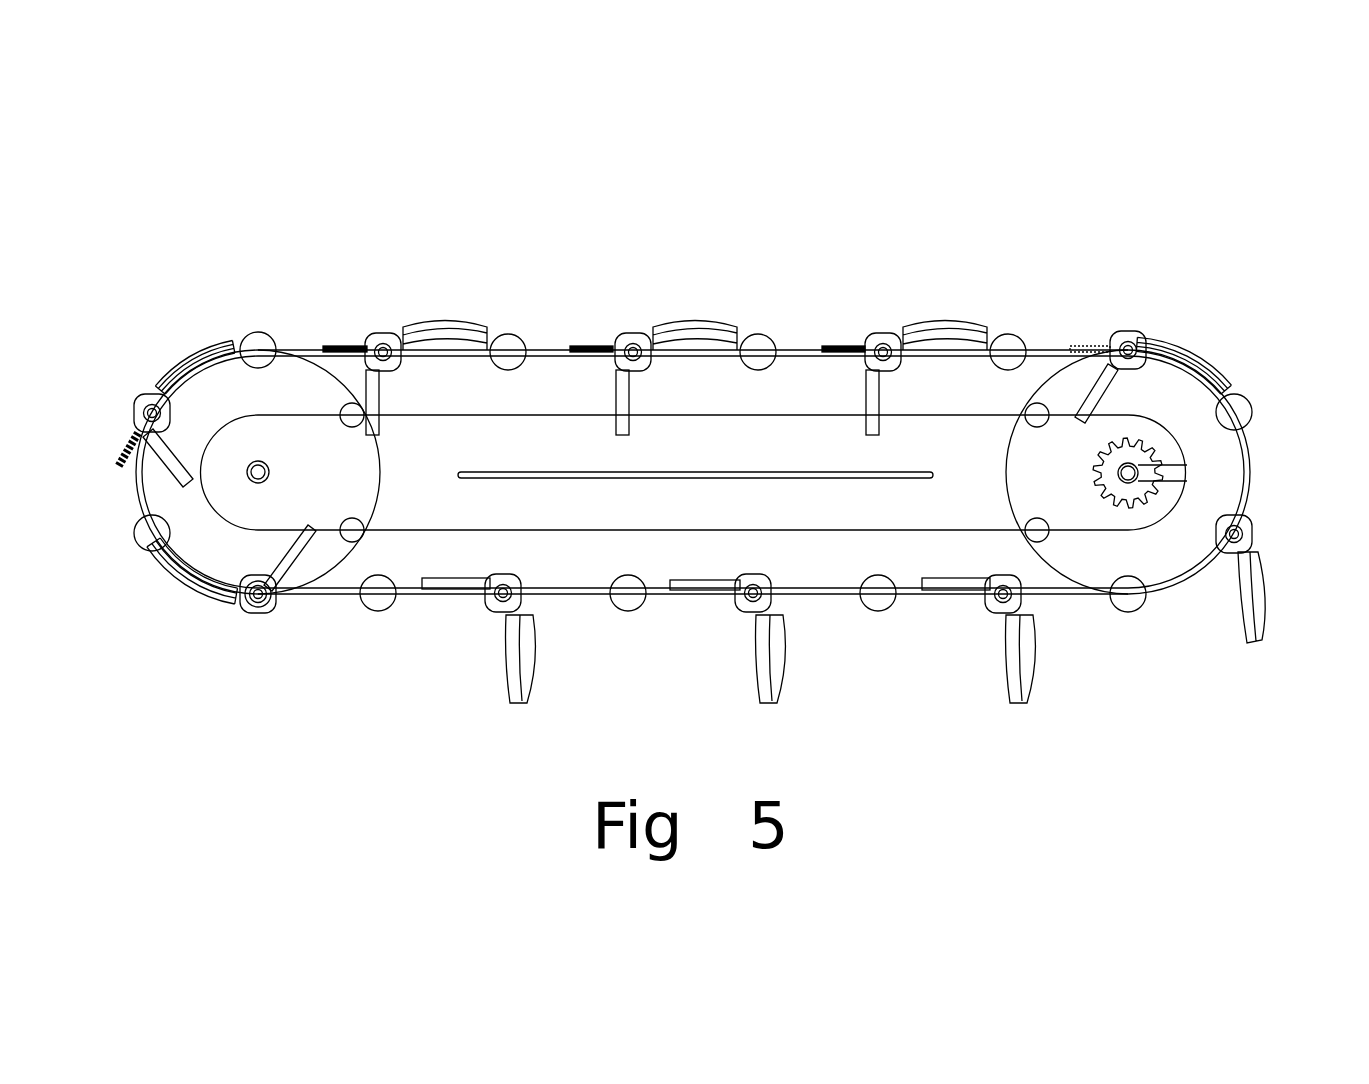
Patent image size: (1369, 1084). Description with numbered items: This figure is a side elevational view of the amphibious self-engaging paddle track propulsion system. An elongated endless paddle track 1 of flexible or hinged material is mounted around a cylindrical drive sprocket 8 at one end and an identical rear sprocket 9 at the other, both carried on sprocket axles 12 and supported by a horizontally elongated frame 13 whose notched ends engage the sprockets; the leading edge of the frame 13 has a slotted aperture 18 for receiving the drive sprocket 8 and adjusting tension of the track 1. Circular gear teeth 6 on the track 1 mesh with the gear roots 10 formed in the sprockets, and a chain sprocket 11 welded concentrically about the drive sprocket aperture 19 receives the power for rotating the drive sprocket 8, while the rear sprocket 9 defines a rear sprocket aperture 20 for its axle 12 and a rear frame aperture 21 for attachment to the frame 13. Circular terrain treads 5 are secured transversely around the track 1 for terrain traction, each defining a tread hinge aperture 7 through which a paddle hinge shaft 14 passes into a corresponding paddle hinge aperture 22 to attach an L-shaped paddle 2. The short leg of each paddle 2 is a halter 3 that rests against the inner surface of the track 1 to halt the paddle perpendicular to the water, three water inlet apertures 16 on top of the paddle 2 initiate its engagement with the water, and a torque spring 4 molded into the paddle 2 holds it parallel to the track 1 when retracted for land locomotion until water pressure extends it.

The paddle track 1 is at (693, 415).
The paddle 2 is at (475, 666).
The halter 3 is at (964, 670).
The torque spring 4 is at (304, 291).
The circular terrain tread 5 is at (1056, 295).
The circular gear teeth 6 is at (656, 651).
The tread hinge aperture 7 is at (512, 483).
The drive sprocket 8 is at (1227, 354).
The rear sprocket 9 is at (196, 352).
The gear root 10 is at (749, 300).
The chain sprocket 11 is at (1173, 370).
The sprocket axle 12 is at (646, 484).
The frame 13 is at (215, 610).
The paddle hinge shaft 14 is at (972, 270).
The water inlet aperture 16 is at (500, 290).
The slotted aperture 18 is at (1230, 451).
The drive sprocket aperture 19 is at (1208, 348).
The rear sprocket aperture 20 is at (159, 590).
The rear frame aperture 21 is at (172, 526).
The paddle hinge aperture 22 is at (1061, 673).